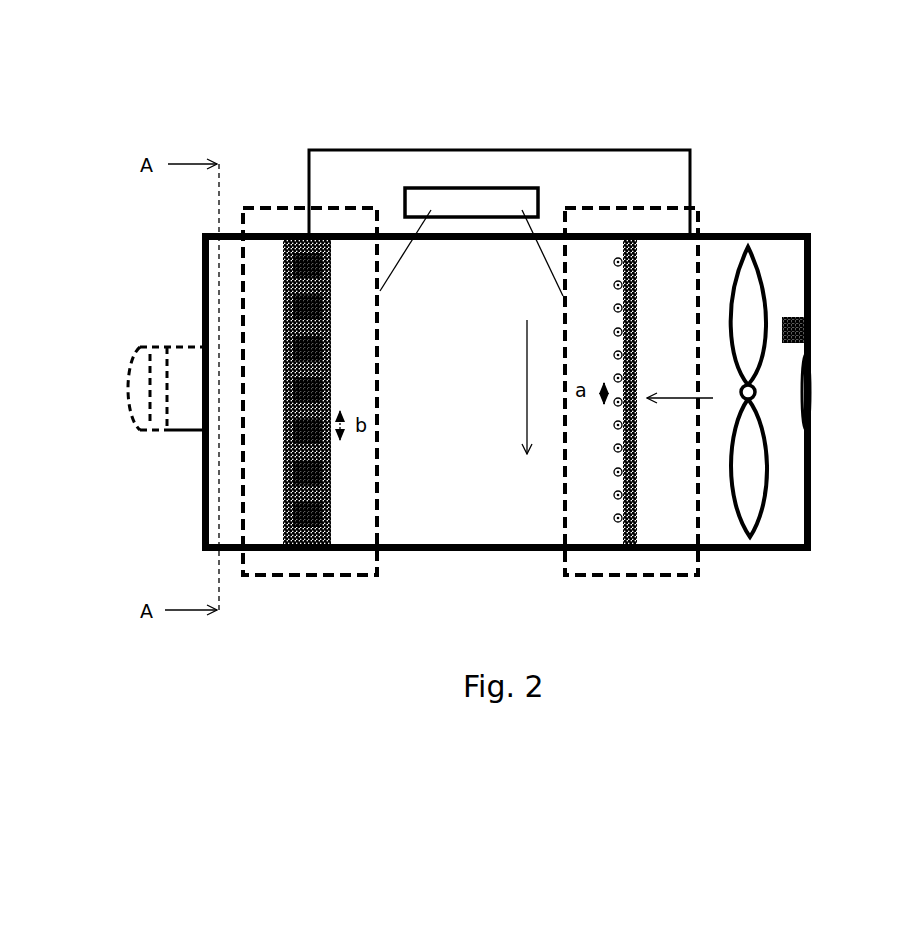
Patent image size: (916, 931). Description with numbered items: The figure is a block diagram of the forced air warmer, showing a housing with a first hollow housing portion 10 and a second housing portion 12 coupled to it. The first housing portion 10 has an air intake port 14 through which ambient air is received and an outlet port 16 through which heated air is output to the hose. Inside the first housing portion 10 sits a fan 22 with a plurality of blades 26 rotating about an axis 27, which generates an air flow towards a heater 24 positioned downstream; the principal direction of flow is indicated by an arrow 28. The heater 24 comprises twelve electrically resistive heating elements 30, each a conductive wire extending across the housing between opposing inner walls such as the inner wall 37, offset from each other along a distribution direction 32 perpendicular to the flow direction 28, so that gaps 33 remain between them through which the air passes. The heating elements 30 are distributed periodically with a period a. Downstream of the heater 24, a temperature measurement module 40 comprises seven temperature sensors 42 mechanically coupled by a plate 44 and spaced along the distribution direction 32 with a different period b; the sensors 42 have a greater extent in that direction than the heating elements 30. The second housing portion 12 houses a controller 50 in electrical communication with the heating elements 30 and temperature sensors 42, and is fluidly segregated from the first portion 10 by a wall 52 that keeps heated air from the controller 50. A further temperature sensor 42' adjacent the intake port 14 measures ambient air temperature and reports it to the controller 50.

The first housing portion 10 is at (780, 235).
The second housing portion 12 is at (693, 163).
The air intake port 14 is at (805, 397).
The outlet port 16 is at (210, 383).
The fan 22 is at (814, 429).
The heater 24 is at (645, 565).
The blades 26 is at (748, 462).
The axis 27 is at (756, 400).
The principle direction of flow 28 is at (665, 396).
The heating elements 30 is at (616, 449).
The distribution direction 32 is at (527, 383).
The gaps 33 is at (612, 292).
The inner wall 37 is at (915, 625).
The temperature measurement module 40 is at (339, 565).
The temperature sensors 42 is at (356, 392).
The temperature sensor 42' is at (830, 337).
The plate 44 is at (282, 470).
The controller 50 is at (480, 198).
The wall 52 is at (468, 243).